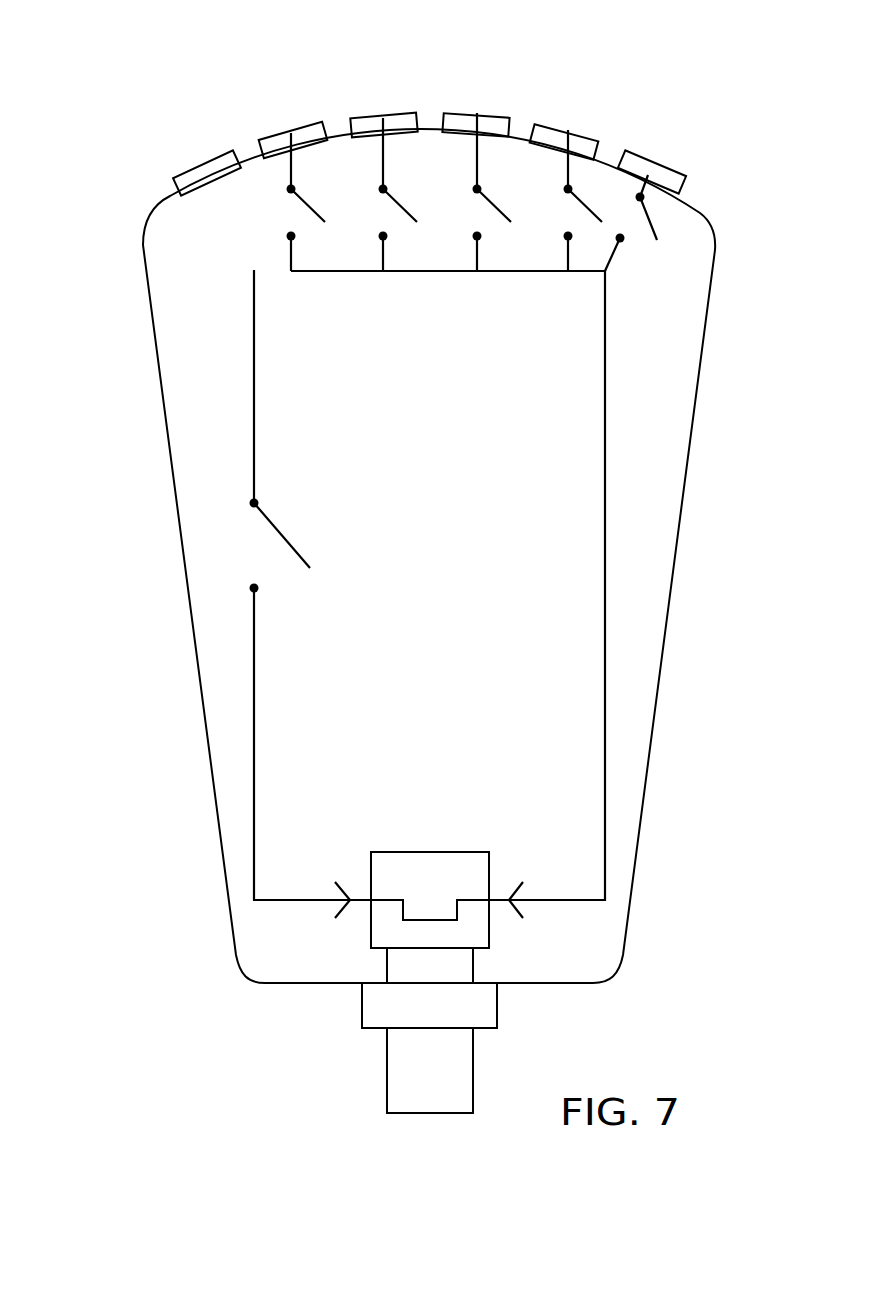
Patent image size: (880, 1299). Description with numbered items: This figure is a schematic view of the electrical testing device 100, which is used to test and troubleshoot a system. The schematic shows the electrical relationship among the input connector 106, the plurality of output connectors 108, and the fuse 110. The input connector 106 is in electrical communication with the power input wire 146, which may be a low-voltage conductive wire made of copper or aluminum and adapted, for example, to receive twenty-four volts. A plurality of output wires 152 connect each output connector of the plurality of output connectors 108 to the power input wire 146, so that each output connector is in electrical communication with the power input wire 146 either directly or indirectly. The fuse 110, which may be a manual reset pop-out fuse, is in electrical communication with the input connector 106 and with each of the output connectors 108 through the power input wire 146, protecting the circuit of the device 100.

The electrical testing device 100 is at (760, 56).
The input connector 106 is at (254, 270).
The plurality of output connectors 108 is at (291, 133).
The fuse 110 is at (398, 867).
The power input wire 146 is at (243, 252).
The plurality of output wires 152 is at (292, 246).